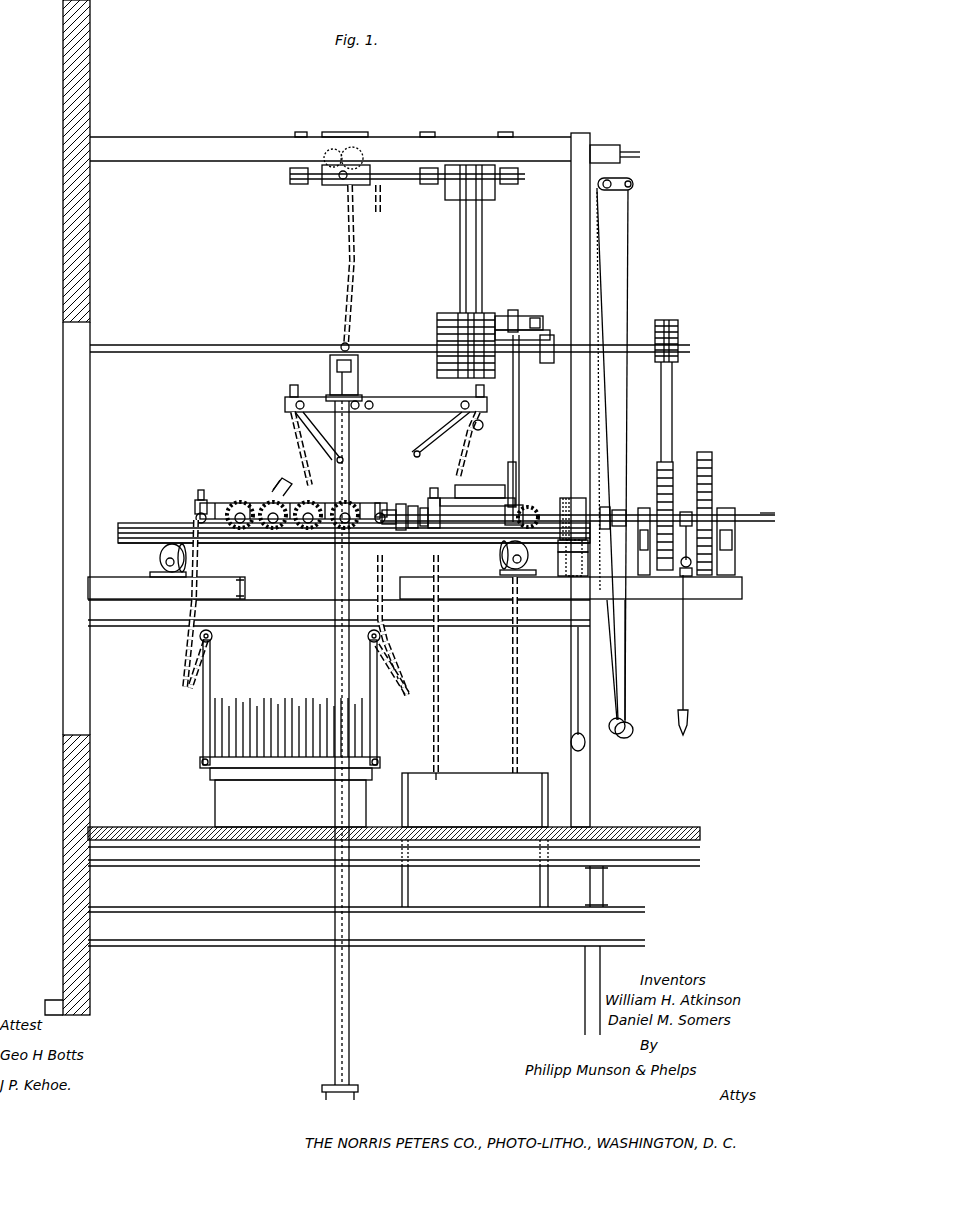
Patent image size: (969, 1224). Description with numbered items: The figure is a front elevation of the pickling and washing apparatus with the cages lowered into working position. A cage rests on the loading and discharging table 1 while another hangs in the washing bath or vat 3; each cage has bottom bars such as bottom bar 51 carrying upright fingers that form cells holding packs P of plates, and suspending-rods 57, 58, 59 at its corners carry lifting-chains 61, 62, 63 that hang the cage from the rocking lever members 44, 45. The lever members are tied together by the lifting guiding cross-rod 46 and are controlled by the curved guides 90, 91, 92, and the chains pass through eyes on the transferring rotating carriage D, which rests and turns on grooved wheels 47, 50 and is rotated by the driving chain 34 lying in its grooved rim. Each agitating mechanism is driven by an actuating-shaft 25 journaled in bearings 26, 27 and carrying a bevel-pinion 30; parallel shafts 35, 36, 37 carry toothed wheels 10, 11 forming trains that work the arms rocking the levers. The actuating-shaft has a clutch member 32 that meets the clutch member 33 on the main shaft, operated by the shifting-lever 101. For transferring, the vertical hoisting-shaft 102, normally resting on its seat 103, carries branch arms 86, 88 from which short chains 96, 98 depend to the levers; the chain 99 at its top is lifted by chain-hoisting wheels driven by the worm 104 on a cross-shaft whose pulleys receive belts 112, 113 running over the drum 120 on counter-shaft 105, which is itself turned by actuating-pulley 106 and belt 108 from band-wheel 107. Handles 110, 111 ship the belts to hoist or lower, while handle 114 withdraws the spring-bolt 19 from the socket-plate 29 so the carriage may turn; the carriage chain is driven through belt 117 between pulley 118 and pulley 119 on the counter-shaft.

The loading and discharging table 1 is at (292, 790).
The washing bath or vat 3 is at (475, 800).
The toothed wheel 10 is at (523, 500).
The toothed wheel 11 is at (418, 502).
The spring-bolt 19 is at (596, 553).
The actuating-shaft 25 is at (273, 530).
The bearing 26 is at (205, 500).
The bearing 27 is at (414, 504).
The socket-plate 29 is at (596, 540).
The bevel-pinion 30 is at (392, 510).
The clutch member 32 is at (573, 510).
The clutch member 33 is at (608, 505).
The driving band or chain 34 is at (478, 545).
The parallel shaft 35 is at (240, 530).
The parallel shaft 36 is at (308, 530).
The parallel shaft 37 is at (345, 530).
The rocking lever member 44 is at (268, 500).
The rocking lever member 45 is at (448, 492).
The lifting guiding cross-rod 46 is at (490, 482).
The grooved wheel 47 is at (186, 556).
The grooved wheel 50 is at (530, 558).
The bottom bar 51 is at (300, 757).
The suspending-rod 57 is at (210, 672).
The suspending-rod 58 is at (438, 770).
The suspending-rod 59 is at (386, 722).
The lifting-chain 61 is at (185, 650).
The lifting-chain 62 is at (438, 680).
The lifting-chain 63 is at (400, 645).
The branch arm 86 is at (322, 397).
The branch arm 88 is at (417, 400).
The curved guide 90 is at (530, 462).
The curved guide 91 is at (428, 505).
The curved guide 92 is at (305, 500).
The short chain 96 is at (292, 448).
The short chain 98 is at (462, 448).
The chain 99 is at (350, 262).
The shifting-lever 101 is at (690, 700).
The vertical hoisting-shaft 102 is at (333, 635).
The seat 103 is at (365, 1088).
The worm 104 is at (341, 173).
The counter-shaft 105 is at (412, 345).
The actuating-pulley 106 is at (680, 330).
The band-wheel 107 is at (673, 462).
The belt 108 is at (670, 415).
The handle 110 is at (622, 660).
The handle 111 is at (628, 685).
The belt 112 is at (460, 252).
The belt 113 is at (490, 248).
The handle 114 is at (578, 712).
The belt 117 is at (520, 348).
The pulley 118 is at (540, 322).
The pulley 119 is at (548, 363).
The drum 120 is at (448, 312).
The transferring rotating carriage D is at (160, 528).
The pack of plates P is at (280, 700).
The carrier A is at (204, 764).